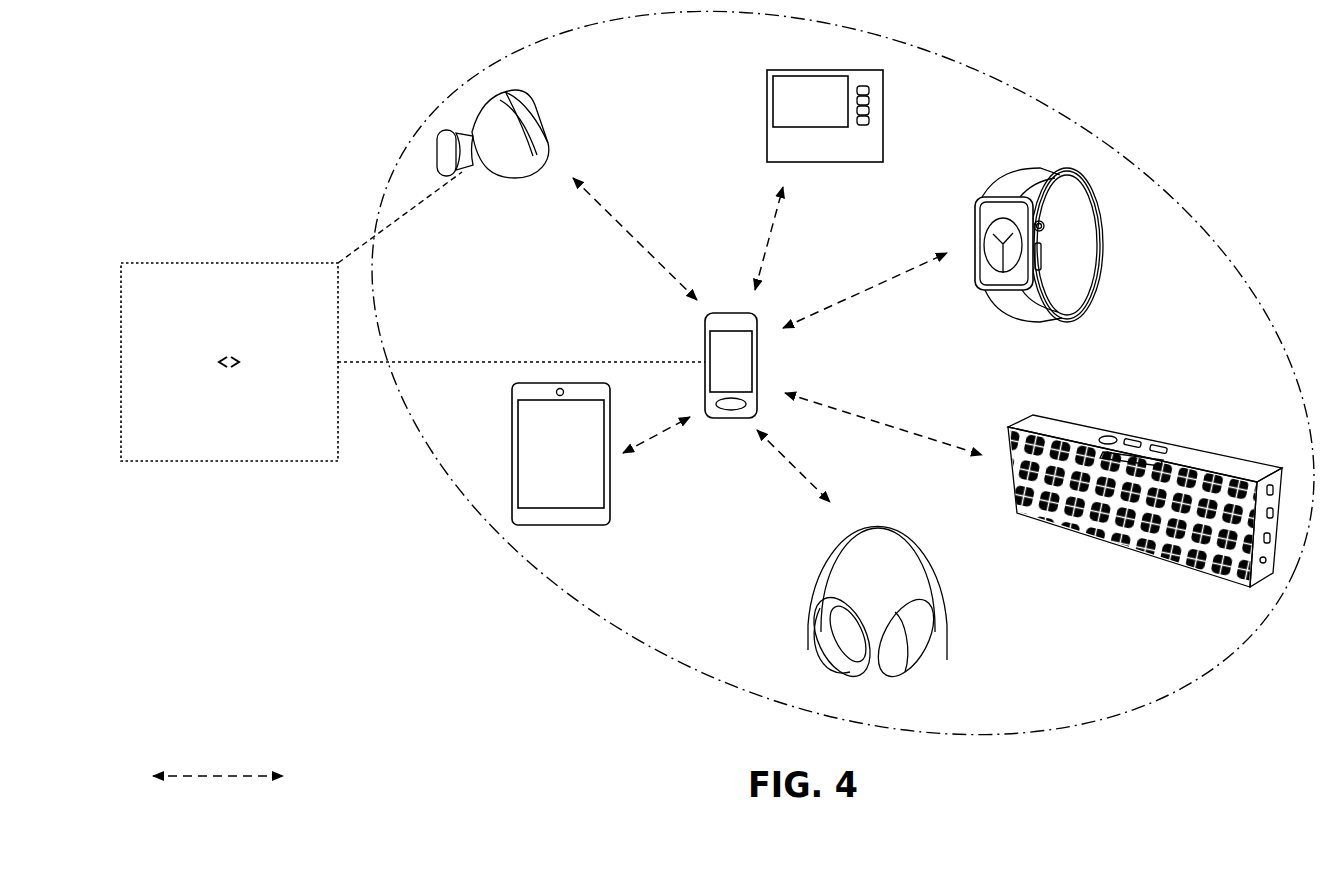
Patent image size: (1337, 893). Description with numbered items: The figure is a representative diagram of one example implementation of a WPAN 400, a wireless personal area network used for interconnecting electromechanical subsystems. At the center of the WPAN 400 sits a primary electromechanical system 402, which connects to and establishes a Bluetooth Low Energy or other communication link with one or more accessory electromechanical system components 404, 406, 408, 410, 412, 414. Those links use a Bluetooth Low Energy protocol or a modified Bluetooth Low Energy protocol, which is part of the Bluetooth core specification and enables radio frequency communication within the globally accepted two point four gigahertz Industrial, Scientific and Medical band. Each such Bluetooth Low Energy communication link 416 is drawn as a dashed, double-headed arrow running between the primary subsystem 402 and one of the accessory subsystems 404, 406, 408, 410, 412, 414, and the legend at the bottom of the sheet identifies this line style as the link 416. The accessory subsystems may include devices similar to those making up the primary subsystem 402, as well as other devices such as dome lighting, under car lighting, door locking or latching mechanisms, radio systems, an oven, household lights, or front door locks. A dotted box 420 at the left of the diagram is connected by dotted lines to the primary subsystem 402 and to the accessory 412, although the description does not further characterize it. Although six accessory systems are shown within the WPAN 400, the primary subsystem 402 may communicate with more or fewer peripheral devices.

The WPAN 400 is at (216, 63).
The primary electromechanical system 402 is at (703, 375).
The accessory electromechanical system component 404 is at (1022, 166).
The accessory electromechanical system component 406 is at (1147, 553).
The accessory electromechanical system component 408 is at (927, 670).
The accessory electromechanical system component 410 is at (600, 525).
The accessory electromechanical system component 412 is at (546, 102).
The accessory electromechanical system component 414 is at (883, 108).
The Bluetooth Low Energy communication link 416 is at (567, 486).
The wireless access point / hub 420 is at (170, 263).